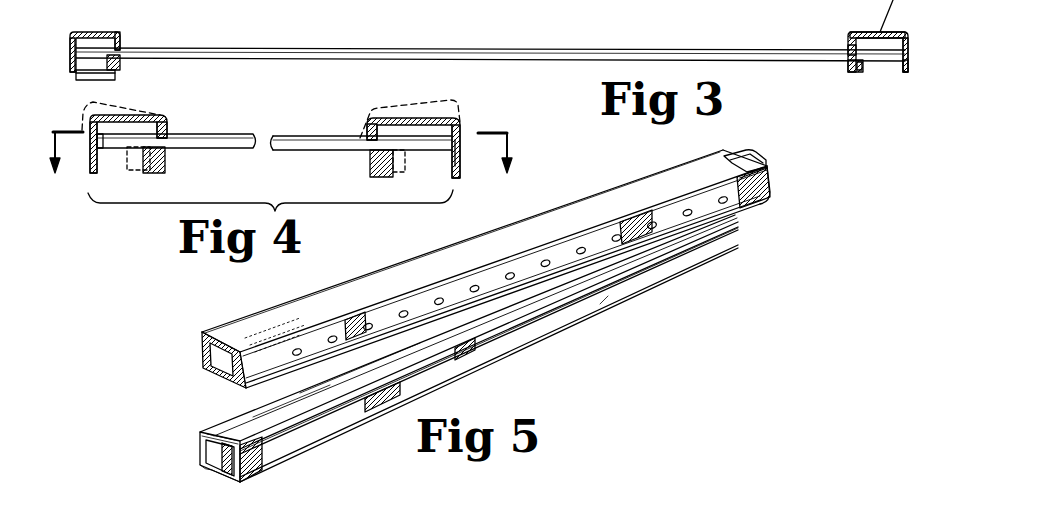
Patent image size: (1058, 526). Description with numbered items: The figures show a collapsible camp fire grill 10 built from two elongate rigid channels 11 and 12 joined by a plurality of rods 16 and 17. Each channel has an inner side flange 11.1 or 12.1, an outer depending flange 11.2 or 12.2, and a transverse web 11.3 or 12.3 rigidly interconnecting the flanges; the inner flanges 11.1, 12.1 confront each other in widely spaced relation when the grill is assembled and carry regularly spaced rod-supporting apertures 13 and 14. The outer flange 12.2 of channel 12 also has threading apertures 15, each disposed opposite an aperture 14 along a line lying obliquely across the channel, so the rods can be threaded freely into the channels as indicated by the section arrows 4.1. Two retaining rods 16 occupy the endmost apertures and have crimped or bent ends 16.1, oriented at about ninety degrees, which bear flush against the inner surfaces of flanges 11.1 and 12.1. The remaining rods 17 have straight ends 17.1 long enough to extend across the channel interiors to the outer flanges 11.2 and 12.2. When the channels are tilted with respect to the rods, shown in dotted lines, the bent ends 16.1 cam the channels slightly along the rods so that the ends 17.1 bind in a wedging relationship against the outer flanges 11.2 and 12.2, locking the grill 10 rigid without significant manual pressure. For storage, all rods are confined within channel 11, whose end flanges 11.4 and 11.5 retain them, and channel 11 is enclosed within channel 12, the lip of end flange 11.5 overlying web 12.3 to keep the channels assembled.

In FIG. 5, the camp fire grill 10 is at (603, 288).
In FIG. 3, the channel 11 is at (98, 32).
In FIG. 4, the channel 11 is at (163, 122).
In FIG. 5, the channel 11 is at (562, 300).
In FIG. 3, the inner side flange 11.1 is at (120, 62).
In FIG. 4, the inner side flange 11.1 is at (165, 160).
In FIG. 5, the inner side flange 11.1 is at (224, 430).
In FIG. 3, the outer depending flange 11.2 is at (68, 47).
In FIG. 4, the outer depending flange 11.2 is at (88, 130).
In FIG. 5, the outer depending flange 11.2 is at (473, 340).
In FIG. 4, the transverse web 11.3 is at (110, 110).
In FIG. 5, the end flange 11.4 is at (215, 458).
In FIG. 5, the end flange 11.5 is at (756, 157).
In FIG. 3, the channel 12 is at (878, 52).
In FIG. 4, the channel 12 is at (386, 118).
In FIG. 5, the channel 12 is at (380, 278).
In FIG. 3, the inner side flange 12.1 is at (848, 72).
In FIG. 4, the inner side flange 12.1 is at (372, 160).
In FIG. 5, the inner side flange 12.1 is at (752, 198).
In FIG. 3, the outer depending flange 12.2 is at (910, 72).
In FIG. 4, the outer depending flange 12.2 is at (461, 122).
In FIG. 5, the outer depending flange 12.2 is at (205, 353).
In FIG. 3, the transverse web 12.3 is at (860, 32).
In FIG. 4, the transverse web 12.3 is at (423, 116).
In FIG. 5, the transverse web 12.3 is at (238, 330).
In FIG. 3, the rod-supporting apertures 13 is at (121, 47).
In FIG. 4, the rod-supporting apertures 13 is at (167, 138).
In FIG. 3, the rod-supporting apertures 14 is at (848, 50).
In FIG. 4, the rod-supporting apertures 14 is at (370, 135).
In FIG. 5, the rod-supporting apertures 14 is at (508, 274).
In FIG. 3, the threading apertures 15 is at (908, 62).
In FIG. 4, the threading apertures 15 is at (460, 140).
In FIG. 5, the retaining rod 16 is at (300, 393).
In FIG. 3, the crimped or bent end 16.1 is at (858, 72).
In FIG. 5, the crimped or bent end 16.1 is at (220, 443).
In FIG. 3, the rod 17 is at (327, 34).
In FIG. 4, the rod 17 is at (254, 134).
In FIG. 5, the rod 17 is at (253, 417).
In FIG. 4, the rod end 17.1 is at (100, 142).
In FIG. 4, the section line 4.1 is at (284, 168).